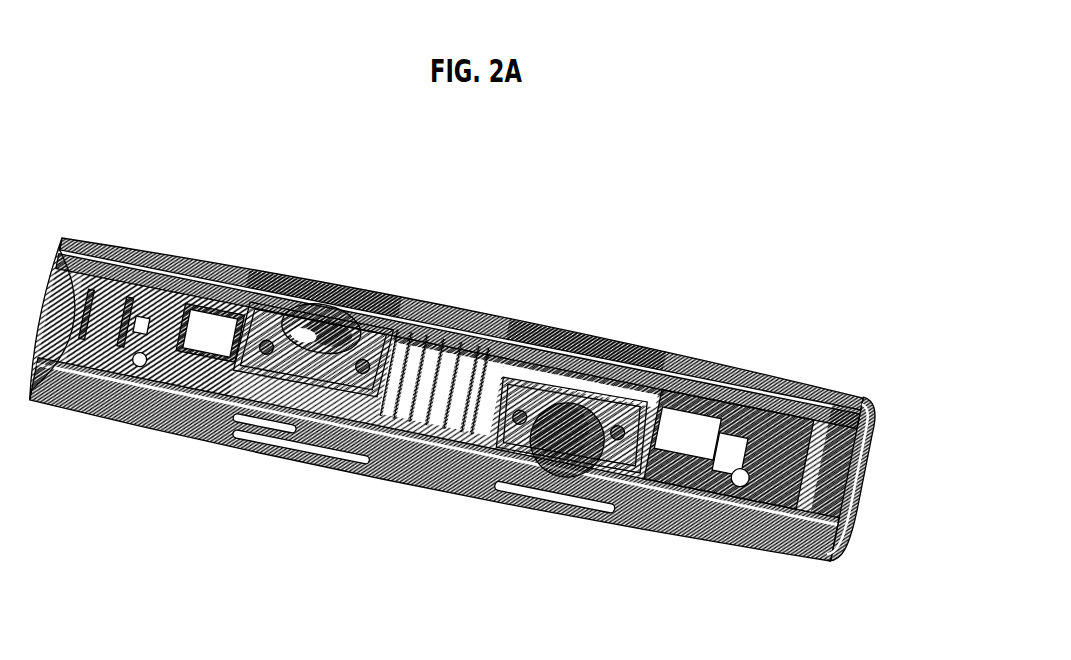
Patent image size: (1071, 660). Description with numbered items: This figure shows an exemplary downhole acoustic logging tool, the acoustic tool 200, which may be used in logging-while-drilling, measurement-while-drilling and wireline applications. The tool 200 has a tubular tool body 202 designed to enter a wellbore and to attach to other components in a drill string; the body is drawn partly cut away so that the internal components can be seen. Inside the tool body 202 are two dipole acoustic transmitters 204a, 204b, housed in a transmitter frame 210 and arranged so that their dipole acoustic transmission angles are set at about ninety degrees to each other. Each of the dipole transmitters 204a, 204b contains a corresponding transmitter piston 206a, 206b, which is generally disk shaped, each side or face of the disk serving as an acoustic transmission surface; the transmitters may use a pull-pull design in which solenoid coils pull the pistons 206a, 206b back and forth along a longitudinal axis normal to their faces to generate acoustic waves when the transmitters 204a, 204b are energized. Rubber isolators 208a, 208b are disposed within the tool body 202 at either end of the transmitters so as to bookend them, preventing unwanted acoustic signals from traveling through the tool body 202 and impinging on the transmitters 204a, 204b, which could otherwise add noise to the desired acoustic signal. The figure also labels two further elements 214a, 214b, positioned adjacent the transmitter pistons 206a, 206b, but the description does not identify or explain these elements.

The acoustic tool 200 is at (713, 181).
The tubular tool body 202 is at (147, 255).
The acoustic transmitter 204a is at (344, 286).
The acoustic transmitter 204b is at (593, 333).
The transmitter piston 206a is at (338, 357).
The transmitter piston 206b is at (567, 465).
The rubber isolator 208a is at (164, 433).
The rubber isolator 208b is at (717, 500).
The transmitter frame 210 is at (414, 488).
The first mounting plate 214a is at (296, 438).
The second mounting plate 214b is at (652, 372).